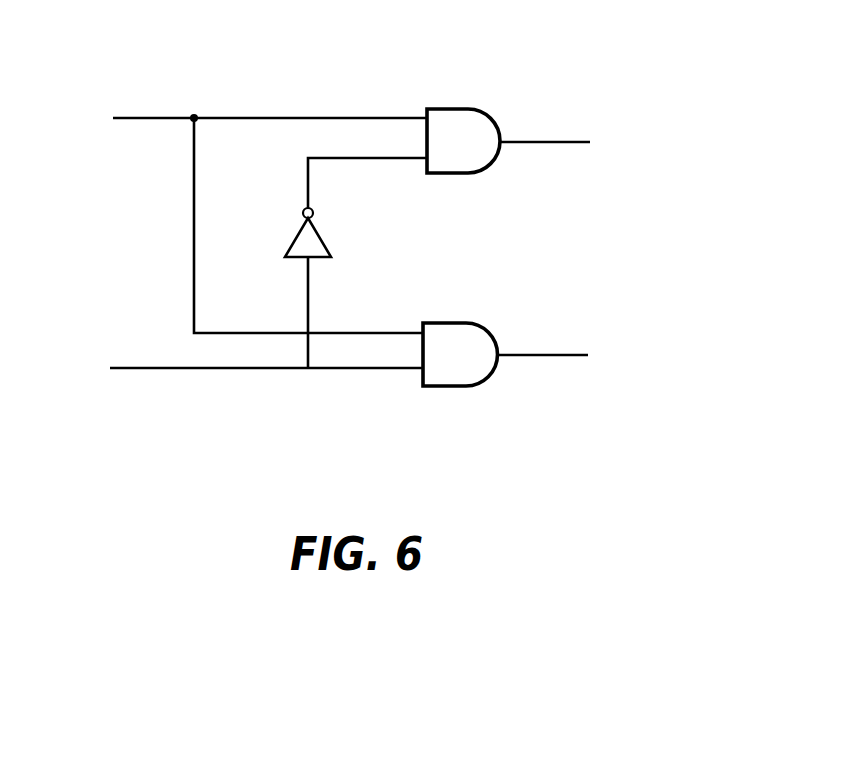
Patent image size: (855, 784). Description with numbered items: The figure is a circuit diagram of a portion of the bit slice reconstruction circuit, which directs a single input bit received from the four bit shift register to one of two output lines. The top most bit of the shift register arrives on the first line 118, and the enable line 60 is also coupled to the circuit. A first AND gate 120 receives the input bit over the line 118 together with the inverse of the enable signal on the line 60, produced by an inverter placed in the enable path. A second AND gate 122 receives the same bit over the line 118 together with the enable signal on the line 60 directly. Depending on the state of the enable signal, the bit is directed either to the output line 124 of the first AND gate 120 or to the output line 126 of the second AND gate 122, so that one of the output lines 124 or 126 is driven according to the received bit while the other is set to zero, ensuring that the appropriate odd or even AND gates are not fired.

The first line 118 is at (147, 117).
The enable line 60 is at (143, 366).
The first AND gate 120 is at (452, 115).
The second AND gate 122 is at (457, 378).
The output line 124 is at (543, 143).
The output line 126 is at (540, 356).